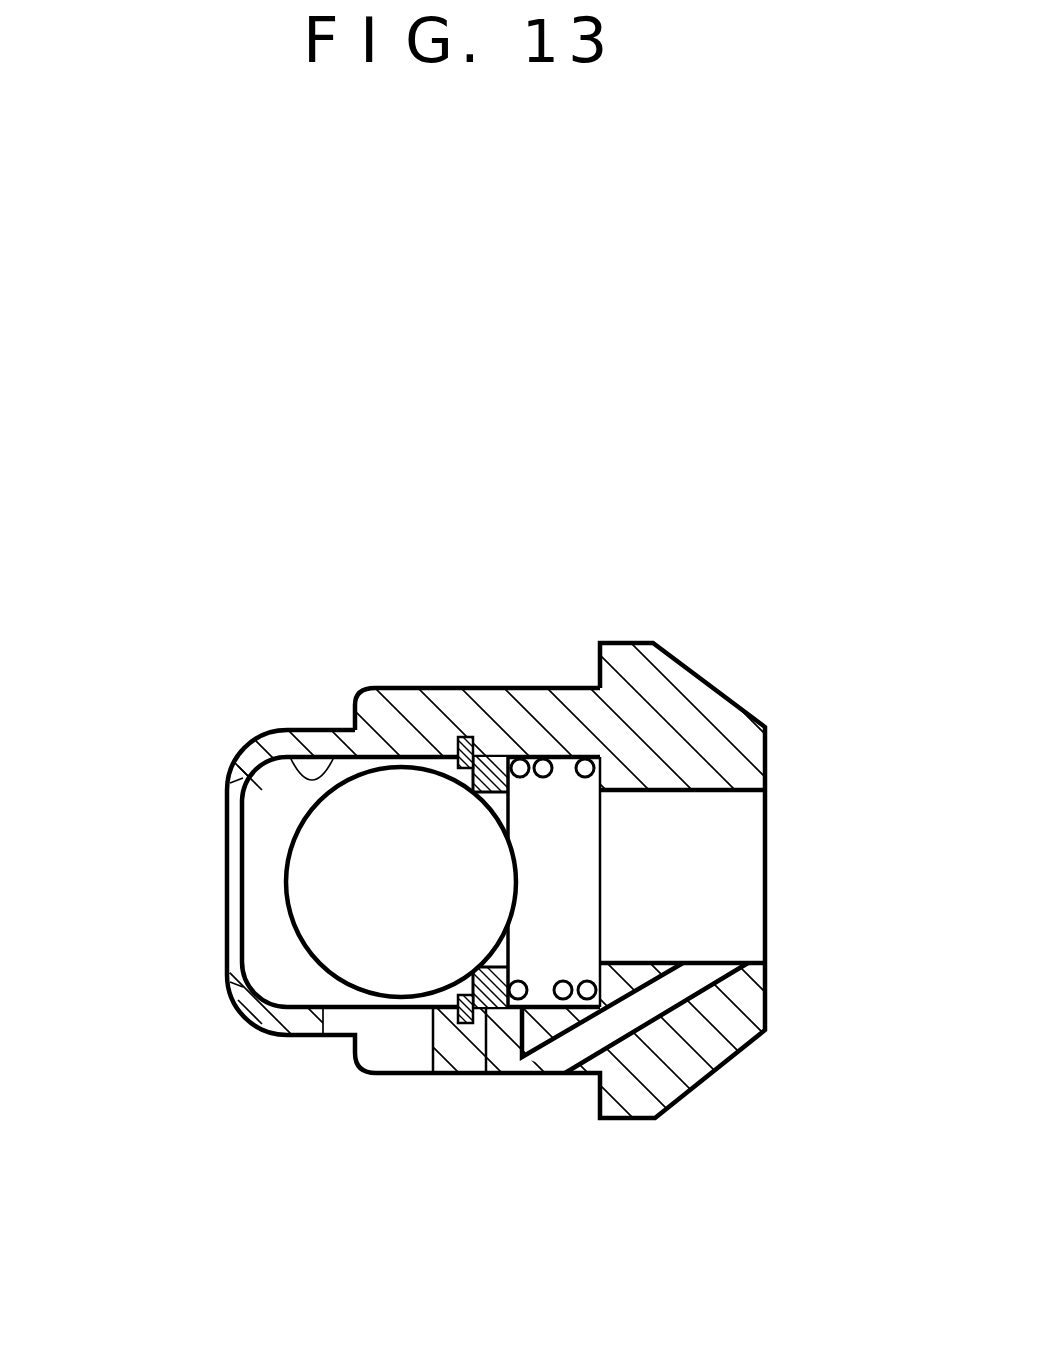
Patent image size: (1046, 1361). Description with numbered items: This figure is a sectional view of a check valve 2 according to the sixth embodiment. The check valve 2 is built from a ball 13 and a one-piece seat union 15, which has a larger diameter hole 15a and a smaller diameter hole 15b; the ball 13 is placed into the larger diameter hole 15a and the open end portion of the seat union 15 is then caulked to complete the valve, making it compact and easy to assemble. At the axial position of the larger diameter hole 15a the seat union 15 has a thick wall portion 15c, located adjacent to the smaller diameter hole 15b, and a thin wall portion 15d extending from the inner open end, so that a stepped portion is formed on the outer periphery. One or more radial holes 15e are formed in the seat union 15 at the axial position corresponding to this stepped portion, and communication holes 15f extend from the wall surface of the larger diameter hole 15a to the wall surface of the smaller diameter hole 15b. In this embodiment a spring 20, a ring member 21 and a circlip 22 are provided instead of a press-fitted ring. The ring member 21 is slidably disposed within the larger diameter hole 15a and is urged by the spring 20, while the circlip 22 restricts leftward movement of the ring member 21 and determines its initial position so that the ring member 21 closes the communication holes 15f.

The check valve 2 is at (512, 399).
The ball 13 is at (323, 884).
The seat union 15 is at (697, 1062).
The larger diameter hole 15a is at (289, 760).
The smaller diameter hole 15b is at (705, 792).
The thick wall portion 15c is at (409, 702).
The thin wall portion 15d is at (263, 748).
The radial hole 15e is at (372, 1035).
The communication hole 15f is at (560, 1055).
The spring 20 is at (598, 750).
The ring member 21 is at (490, 755).
The circlip 22 is at (462, 1020).